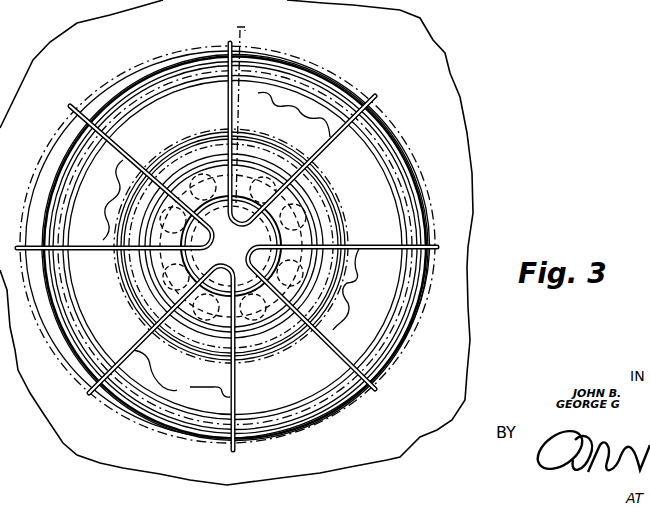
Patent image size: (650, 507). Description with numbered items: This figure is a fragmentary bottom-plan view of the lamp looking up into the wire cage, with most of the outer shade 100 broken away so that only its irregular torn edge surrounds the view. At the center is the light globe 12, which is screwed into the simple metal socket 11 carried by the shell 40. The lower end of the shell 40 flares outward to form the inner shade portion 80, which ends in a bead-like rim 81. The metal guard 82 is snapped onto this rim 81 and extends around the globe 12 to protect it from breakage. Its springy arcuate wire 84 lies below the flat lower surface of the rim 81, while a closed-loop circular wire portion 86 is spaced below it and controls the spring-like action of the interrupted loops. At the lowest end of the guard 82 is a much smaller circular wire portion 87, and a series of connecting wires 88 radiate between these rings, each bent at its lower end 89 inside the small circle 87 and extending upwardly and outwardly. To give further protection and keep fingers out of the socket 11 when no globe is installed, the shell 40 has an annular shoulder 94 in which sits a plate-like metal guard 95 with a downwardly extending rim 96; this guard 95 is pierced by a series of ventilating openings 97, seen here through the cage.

The outer shade 100 is at (459, 77).
The inner shade portion 80 is at (293, 393).
The circular wire portion 86 is at (170, 64).
The rim 81 is at (132, 88).
The shell 40 is at (392, 170).
The light globe 12 is at (134, 304).
The plate-like metal guard 95 is at (300, 155).
The rim 96 is at (249, 143).
The annular shoulder 94 is at (223, 167).
The circular wire portion 87 is at (219, 168).
The ventilating openings 97 is at (251, 160).
The lower ends 89 is at (246, 256).
The metal socket 11 is at (236, 234).
The connecting wires 88 is at (350, 296).
The arcuate-shaped wire 84 is at (52, 122).
The metal guard 82 is at (348, 339).